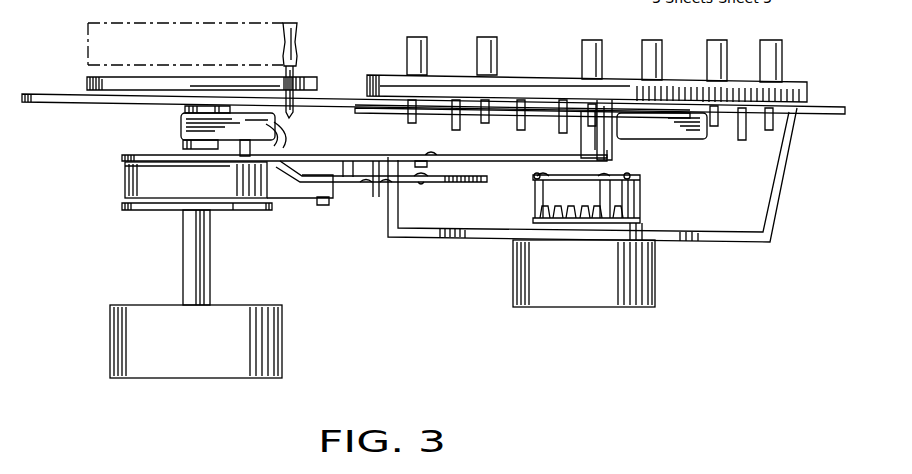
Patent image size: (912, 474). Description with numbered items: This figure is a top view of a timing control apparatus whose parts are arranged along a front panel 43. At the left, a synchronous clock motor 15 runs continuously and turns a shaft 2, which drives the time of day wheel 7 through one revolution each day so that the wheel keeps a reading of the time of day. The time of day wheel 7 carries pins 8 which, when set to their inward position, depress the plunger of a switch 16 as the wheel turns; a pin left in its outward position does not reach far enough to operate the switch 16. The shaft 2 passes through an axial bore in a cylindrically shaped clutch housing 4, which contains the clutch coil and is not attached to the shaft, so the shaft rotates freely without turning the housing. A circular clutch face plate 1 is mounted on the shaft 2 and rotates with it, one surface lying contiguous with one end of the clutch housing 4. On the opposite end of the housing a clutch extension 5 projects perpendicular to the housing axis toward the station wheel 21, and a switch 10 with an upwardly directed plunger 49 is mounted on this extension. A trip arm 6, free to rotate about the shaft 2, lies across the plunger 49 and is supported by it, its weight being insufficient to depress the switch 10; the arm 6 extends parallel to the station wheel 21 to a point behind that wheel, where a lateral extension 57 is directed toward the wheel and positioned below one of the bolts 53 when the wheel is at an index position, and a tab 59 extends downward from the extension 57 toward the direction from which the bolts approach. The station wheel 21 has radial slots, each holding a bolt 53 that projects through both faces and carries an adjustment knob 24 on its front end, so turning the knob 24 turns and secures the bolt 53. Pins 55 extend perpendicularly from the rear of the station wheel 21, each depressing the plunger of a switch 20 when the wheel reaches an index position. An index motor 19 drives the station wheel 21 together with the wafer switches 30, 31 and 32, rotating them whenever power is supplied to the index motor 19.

The clutch face plate 1 is at (233, 203).
The shaft 2 is at (183, 233).
The clutch housing 4 is at (272, 196).
The clutch extension 5 is at (478, 182).
The trip arm 6 is at (520, 160).
The time of day wheel 7 is at (87, 84).
The pins 8 is at (290, 23).
The switch 10 is at (378, 170).
The clock motor 15 is at (282, 336).
The switch 16 is at (181, 124).
The index motor 19 is at (655, 289).
The switch 20 is at (672, 141).
The station wheel 21 is at (805, 96).
The adjustment knob 24 is at (772, 40).
The wafer switch 30 is at (604, 175).
The wafer switch 31 is at (640, 218).
The wafer switch 32 is at (625, 180).
The front panel 43 is at (847, 113).
The plunger 49 is at (418, 168).
The bolt 53 is at (410, 120).
The pins 55 is at (505, 138).
The lateral extension 57 is at (558, 136).
The tab 59 is at (605, 150).